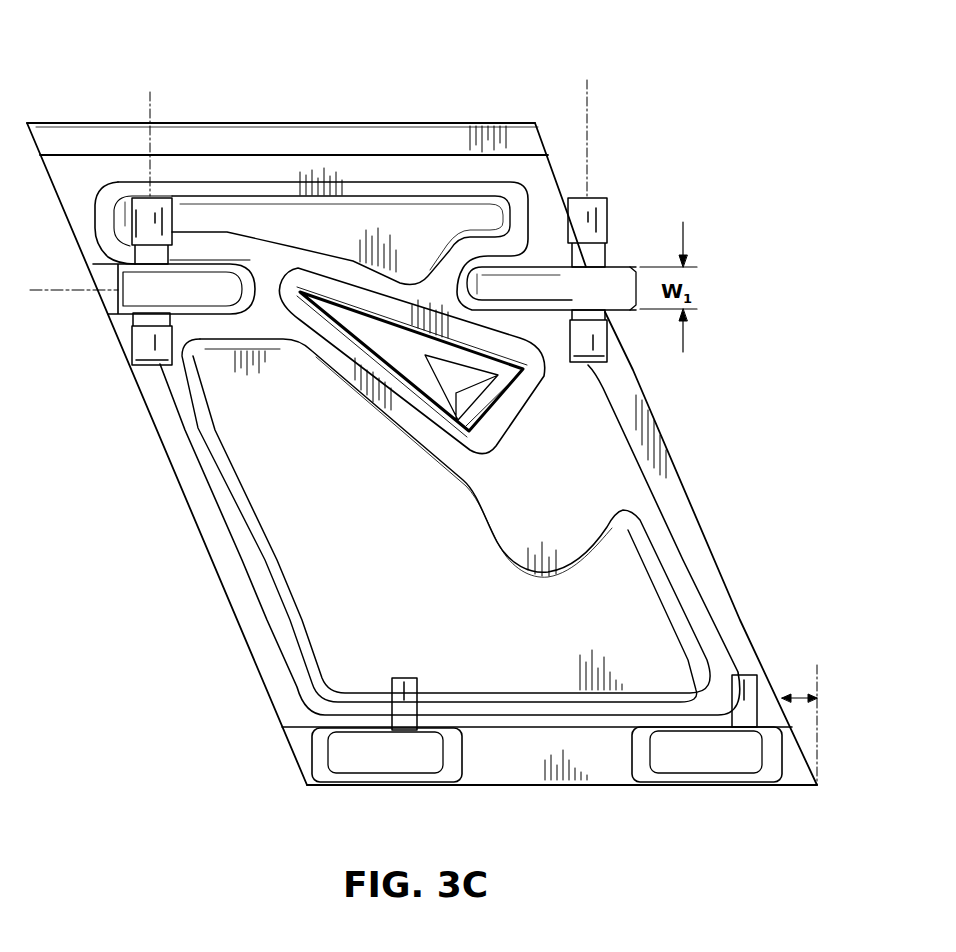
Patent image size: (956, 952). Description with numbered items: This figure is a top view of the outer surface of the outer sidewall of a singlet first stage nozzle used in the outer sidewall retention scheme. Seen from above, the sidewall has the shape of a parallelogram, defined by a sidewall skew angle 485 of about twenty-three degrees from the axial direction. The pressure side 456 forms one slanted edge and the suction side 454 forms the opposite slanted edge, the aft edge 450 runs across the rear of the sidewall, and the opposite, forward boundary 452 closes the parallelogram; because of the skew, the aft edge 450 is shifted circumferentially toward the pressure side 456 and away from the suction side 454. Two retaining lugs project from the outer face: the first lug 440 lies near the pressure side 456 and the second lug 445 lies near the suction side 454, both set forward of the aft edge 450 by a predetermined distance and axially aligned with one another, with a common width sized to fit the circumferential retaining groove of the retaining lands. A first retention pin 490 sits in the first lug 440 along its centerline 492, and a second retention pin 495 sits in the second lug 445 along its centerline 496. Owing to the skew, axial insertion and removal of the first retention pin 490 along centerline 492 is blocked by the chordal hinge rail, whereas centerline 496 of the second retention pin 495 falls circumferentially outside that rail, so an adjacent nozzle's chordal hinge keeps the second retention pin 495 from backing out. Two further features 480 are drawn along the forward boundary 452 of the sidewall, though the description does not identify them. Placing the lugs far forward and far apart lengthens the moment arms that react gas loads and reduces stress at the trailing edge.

The first lug 440 is at (198, 283).
The second lug 445 is at (556, 283).
The aft edge 450 is at (385, 122).
The bottom edge of panel 452 is at (537, 786).
The suction side 454 is at (642, 397).
The pressure side 456 is at (117, 338).
The mounting recesses 480 is at (370, 763).
The sidewall skew angle 485 is at (793, 698).
The first retention pin 490 is at (173, 225).
The centerline 492 is at (150, 92).
The second retention pin 495 is at (593, 197).
The centerline 496 is at (587, 112).